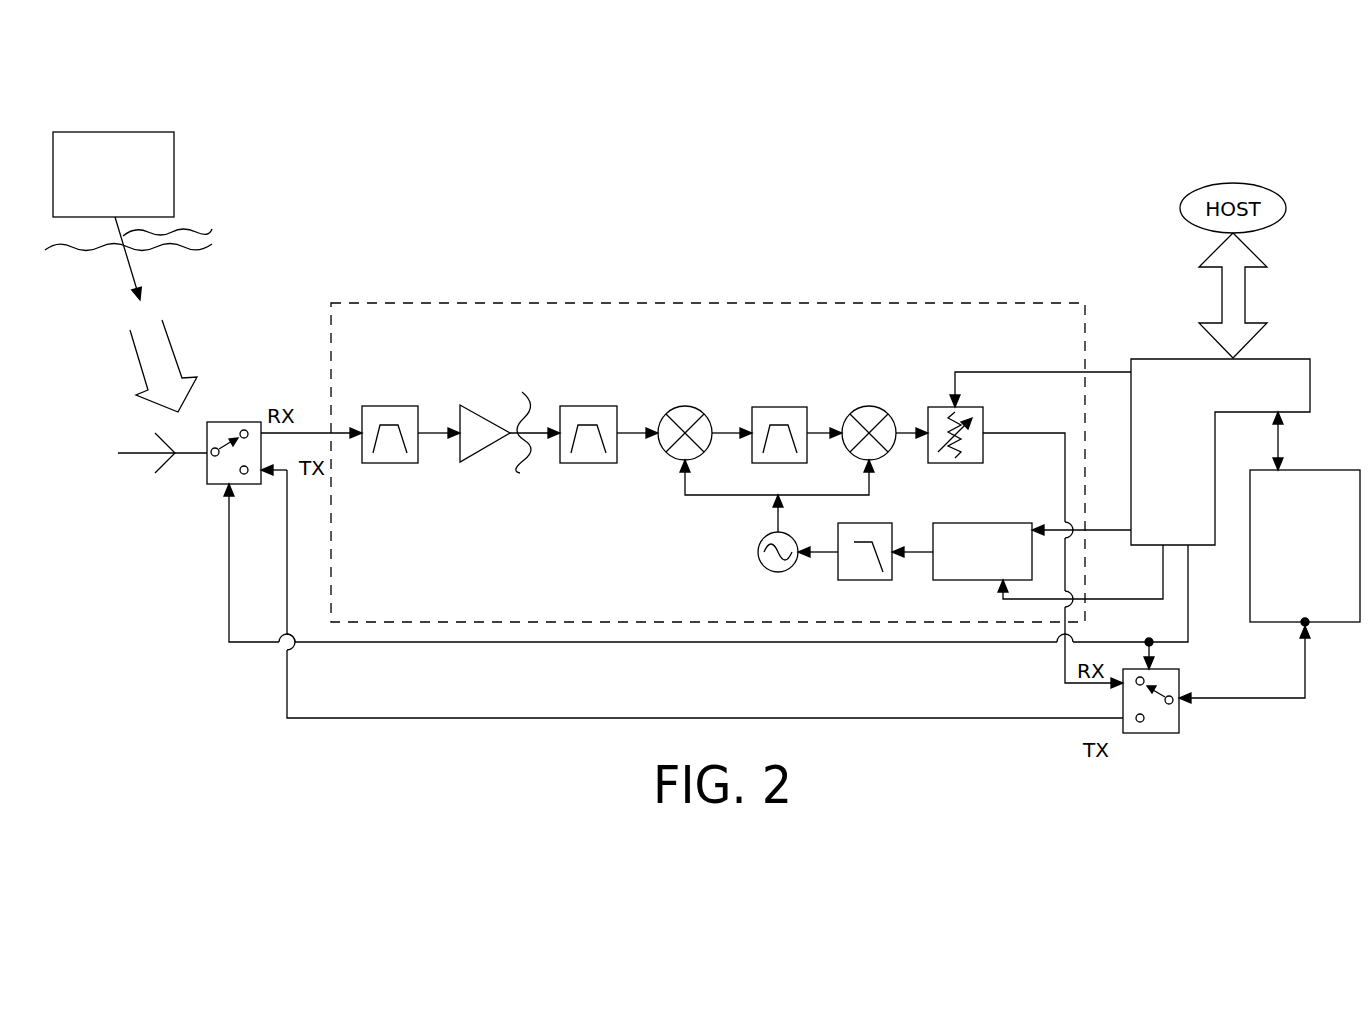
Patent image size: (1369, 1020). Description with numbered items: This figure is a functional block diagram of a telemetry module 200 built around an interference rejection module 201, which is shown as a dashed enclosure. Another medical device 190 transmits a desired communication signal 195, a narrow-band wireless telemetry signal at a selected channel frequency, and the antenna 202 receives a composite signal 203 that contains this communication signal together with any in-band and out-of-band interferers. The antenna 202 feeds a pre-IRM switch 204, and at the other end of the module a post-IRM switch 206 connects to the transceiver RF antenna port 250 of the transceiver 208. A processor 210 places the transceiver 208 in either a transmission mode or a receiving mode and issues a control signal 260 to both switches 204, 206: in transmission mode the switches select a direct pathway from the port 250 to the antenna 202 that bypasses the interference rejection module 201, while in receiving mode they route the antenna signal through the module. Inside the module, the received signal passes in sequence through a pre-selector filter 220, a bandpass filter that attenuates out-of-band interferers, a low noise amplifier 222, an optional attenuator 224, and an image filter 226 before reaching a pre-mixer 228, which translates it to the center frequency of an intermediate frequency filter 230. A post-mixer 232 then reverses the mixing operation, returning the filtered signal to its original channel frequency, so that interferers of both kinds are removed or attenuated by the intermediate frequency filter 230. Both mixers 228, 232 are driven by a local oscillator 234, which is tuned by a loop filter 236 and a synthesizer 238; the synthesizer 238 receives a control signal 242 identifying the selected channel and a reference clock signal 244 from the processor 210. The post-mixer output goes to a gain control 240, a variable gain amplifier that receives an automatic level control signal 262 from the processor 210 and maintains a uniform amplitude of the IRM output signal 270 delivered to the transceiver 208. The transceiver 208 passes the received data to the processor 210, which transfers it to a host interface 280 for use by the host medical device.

The telemetry module 200 is at (763, 113).
The medical device 190 is at (120, 132).
The communication signal 195 is at (212, 229).
The received signal 203 is at (170, 348).
The antenna 202 is at (130, 453).
The pre-IRM switch 204 is at (211, 422).
The interference rejection module 201 is at (863, 303).
The pre-selector filter 220 is at (370, 463).
The low noise amplifier 222 is at (487, 452).
The attenuator 224 is at (522, 473).
The image filter 226 is at (570, 463).
The pre-mixer 228 is at (685, 406).
The intermediate frequency filter 230 is at (792, 407).
The post-mixer 232 is at (869, 406).
The gain control 240 is at (962, 463).
The local oscillator 234 is at (758, 553).
The loop filter 236 is at (855, 580).
The synthesizer 238 is at (958, 523).
The automatic level control signal 262 is at (1065, 372).
The IRM output signal 270 is at (1008, 430).
The control signal 242 is at (1090, 533).
The reference clock signal 244 is at (1093, 603).
The control signal 260 is at (228, 593).
The post-IRM switch 206 is at (1150, 733).
The transceiver RF antenna port 250 is at (1310, 624).
The transceiver 208 is at (1286, 588).
The processor 210 is at (1150, 445).
The host interface 280 is at (1282, 213).